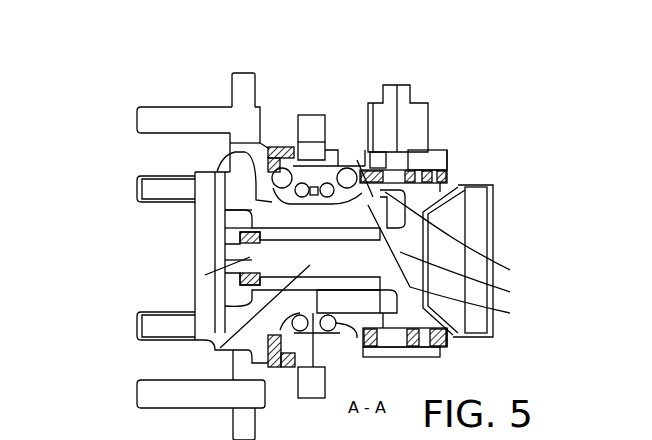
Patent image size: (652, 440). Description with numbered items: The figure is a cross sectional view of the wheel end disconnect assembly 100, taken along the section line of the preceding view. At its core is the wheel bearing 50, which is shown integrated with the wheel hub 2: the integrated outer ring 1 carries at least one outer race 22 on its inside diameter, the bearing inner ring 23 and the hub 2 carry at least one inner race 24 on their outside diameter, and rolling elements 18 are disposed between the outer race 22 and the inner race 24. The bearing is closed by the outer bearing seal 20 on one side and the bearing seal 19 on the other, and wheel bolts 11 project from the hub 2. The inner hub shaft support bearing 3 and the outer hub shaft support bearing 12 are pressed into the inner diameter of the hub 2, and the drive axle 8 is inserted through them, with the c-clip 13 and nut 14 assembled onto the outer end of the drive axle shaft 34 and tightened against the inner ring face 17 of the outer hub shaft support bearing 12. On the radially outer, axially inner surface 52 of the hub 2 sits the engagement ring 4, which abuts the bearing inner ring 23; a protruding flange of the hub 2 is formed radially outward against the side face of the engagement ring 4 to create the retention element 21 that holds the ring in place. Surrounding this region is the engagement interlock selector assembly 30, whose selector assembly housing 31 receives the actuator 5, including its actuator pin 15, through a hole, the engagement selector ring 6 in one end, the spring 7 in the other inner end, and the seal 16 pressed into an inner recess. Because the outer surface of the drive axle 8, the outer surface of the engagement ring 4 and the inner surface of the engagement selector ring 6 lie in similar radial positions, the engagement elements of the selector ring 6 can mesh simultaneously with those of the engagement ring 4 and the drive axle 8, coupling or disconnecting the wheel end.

The integrated outer ring 1 is at (315, 115).
The hub 2 is at (228, 152).
The inner hub shaft support bearing 3 is at (510, 313).
The engagement ring 4 is at (510, 292).
The actuator 5 is at (430, 127).
The engagement selector ring 6 is at (510, 270).
The spring 7 is at (425, 180).
The drive axle 8 is at (475, 205).
The wheel bolts 11 is at (162, 108).
The outer hub shaft support bearing 12 is at (226, 211).
The C-clip 13 is at (228, 232).
The nut 14 is at (226, 262).
The actuator pin 15 is at (405, 163).
The seal 16 is at (445, 192).
The inner ring face 17 is at (205, 275).
The rolling elements 18 is at (345, 163).
The bearing seal 19 is at (380, 357).
The outer bearing seal 20 is at (278, 148).
The retention element 21 is at (413, 352).
The outer race 22 is at (195, 178).
The inner ring 23 is at (345, 365).
The inner race 24 is at (398, 100).
The engagement interlock selector assembly 30 is at (440, 360).
The selector assembly housing 31 is at (357, 158).
The drive axle shaft 34 is at (220, 348).
The wheel bearing 50 is at (197, 300).
The radially outer, axially inner surface 52 is at (306, 400).
The wheel end disconnect assembly 100 is at (568, 122).